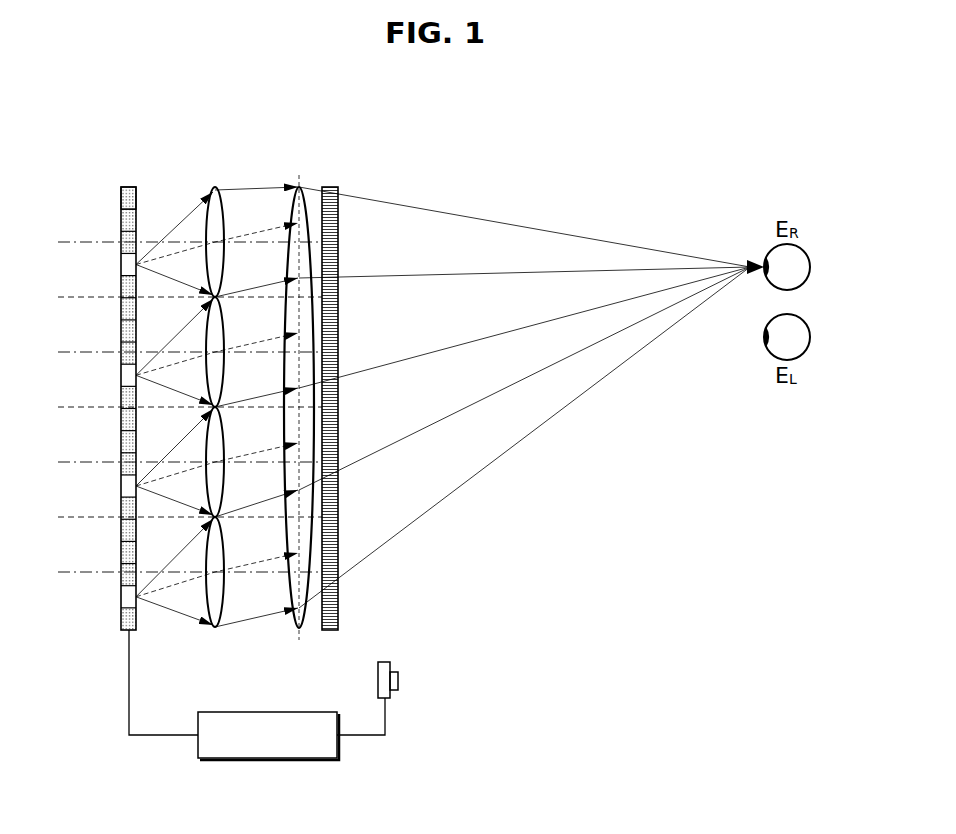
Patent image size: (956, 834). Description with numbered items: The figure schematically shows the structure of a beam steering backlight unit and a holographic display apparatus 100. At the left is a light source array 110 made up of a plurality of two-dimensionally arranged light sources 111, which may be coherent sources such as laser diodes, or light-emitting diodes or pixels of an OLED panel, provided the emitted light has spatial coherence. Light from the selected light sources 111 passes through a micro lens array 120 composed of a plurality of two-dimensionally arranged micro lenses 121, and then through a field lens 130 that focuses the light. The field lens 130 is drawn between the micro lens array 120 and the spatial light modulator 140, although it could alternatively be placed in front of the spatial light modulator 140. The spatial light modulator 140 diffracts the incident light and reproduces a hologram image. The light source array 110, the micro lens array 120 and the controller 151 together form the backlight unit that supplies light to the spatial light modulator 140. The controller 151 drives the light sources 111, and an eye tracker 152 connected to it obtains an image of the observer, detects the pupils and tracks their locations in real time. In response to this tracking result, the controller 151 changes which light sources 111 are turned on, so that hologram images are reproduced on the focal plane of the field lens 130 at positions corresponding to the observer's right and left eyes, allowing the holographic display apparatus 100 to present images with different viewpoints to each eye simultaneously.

The holographic display apparatus 100 is at (117, 702).
The light source array 110 is at (129, 187).
The light source 111 is at (125, 198).
The micro lens array 120 is at (215, 187).
The micro lens 121 is at (210, 200).
The field lens 130 is at (299, 186).
The spatial light modulator 140 is at (334, 187).
The controller 151 is at (268, 712).
The eye tracker 152 is at (385, 661).